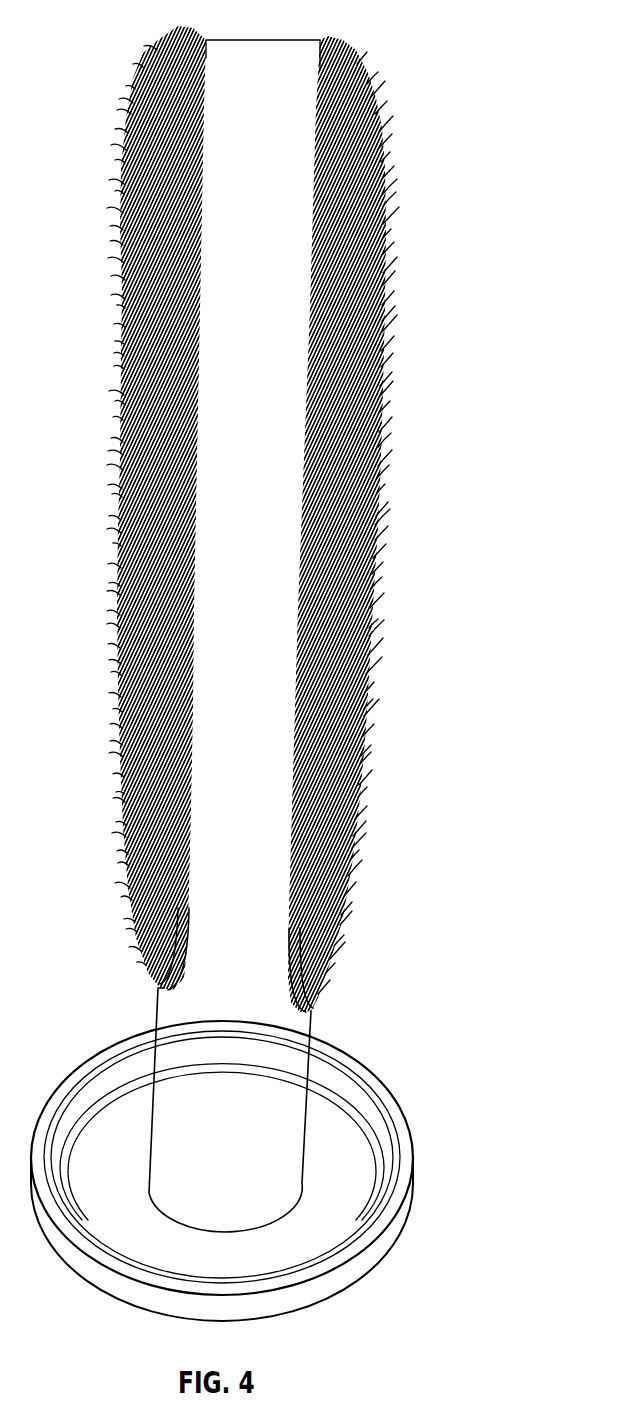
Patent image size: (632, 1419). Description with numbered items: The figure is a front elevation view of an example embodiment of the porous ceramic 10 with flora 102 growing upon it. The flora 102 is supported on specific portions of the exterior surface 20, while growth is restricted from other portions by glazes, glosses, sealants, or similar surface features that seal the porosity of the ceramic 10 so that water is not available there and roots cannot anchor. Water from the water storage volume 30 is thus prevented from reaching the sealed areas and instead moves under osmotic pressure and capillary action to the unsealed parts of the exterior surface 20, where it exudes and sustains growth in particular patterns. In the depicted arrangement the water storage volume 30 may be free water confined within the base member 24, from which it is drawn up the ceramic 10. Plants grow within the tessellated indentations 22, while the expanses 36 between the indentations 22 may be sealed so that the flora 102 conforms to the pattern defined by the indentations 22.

The ceramic 10 is at (301, 670).
The exterior surface 20 is at (287, 519).
The tessellated indentations 22 is at (193, 972).
The base member 24 is at (256, 1223).
The water storage volume 30 is at (256, 1171).
The expanses 36 is at (234, 636).
The flora 102 is at (288, 520).